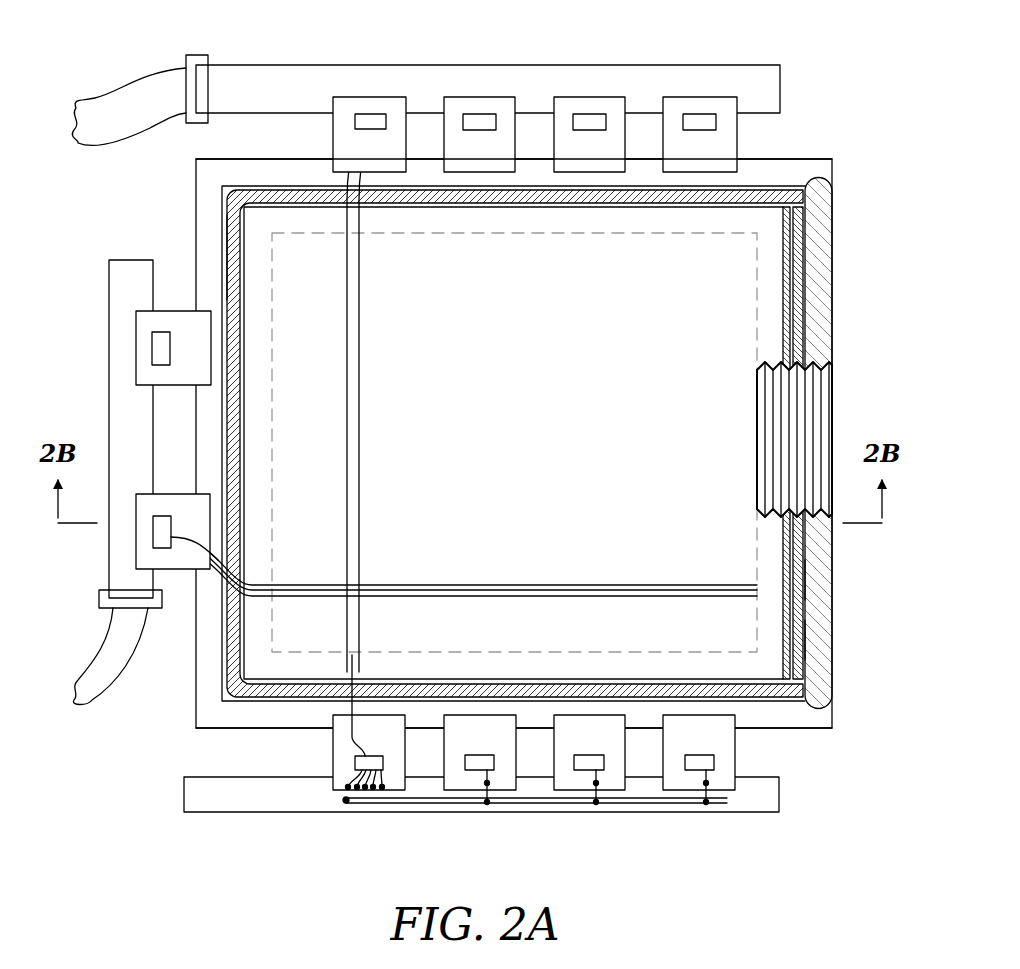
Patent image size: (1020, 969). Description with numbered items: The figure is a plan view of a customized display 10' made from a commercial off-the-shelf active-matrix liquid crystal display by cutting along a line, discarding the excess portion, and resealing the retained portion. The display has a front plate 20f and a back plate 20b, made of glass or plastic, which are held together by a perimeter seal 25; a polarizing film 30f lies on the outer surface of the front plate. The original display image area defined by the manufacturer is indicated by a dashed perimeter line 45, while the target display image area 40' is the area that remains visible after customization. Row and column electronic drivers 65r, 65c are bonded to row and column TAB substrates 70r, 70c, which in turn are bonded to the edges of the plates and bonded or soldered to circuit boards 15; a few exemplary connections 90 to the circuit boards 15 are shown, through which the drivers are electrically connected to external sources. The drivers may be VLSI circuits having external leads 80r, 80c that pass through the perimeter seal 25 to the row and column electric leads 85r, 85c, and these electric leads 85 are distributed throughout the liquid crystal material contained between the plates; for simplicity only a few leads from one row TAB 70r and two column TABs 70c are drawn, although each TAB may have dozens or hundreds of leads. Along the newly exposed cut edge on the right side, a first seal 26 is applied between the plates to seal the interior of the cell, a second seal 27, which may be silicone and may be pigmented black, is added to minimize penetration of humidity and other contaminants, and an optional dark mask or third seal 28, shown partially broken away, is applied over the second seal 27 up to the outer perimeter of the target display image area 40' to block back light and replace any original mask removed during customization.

The customized display 10' is at (535, 109).
The circuit boards 15 is at (258, 88).
The front plate 20f is at (223, 187).
The back plate 20b is at (210, 709).
The perimeter seal 25 is at (750, 199).
The first seal 26 is at (798, 638).
The second seal 27 is at (820, 578).
The mask or third seal 28 is at (815, 385).
The polarizing film 30f is at (247, 232).
The target display image area 40' is at (808, 443).
The dashed perimeter line 45 is at (762, 313).
The column electronic driver 65c is at (368, 120).
The row electronic driver 65r is at (162, 348).
The column TAB substrate 70c is at (345, 103).
The row TAB substrate 70r is at (145, 373).
The column external leads 80c is at (353, 733).
The row external leads 80r is at (188, 558).
The row and column electric leads 85 is at (795, 277).
The column electric leads 85c is at (360, 441).
The row electric leads 85r is at (512, 585).
The connections 90 is at (385, 780).